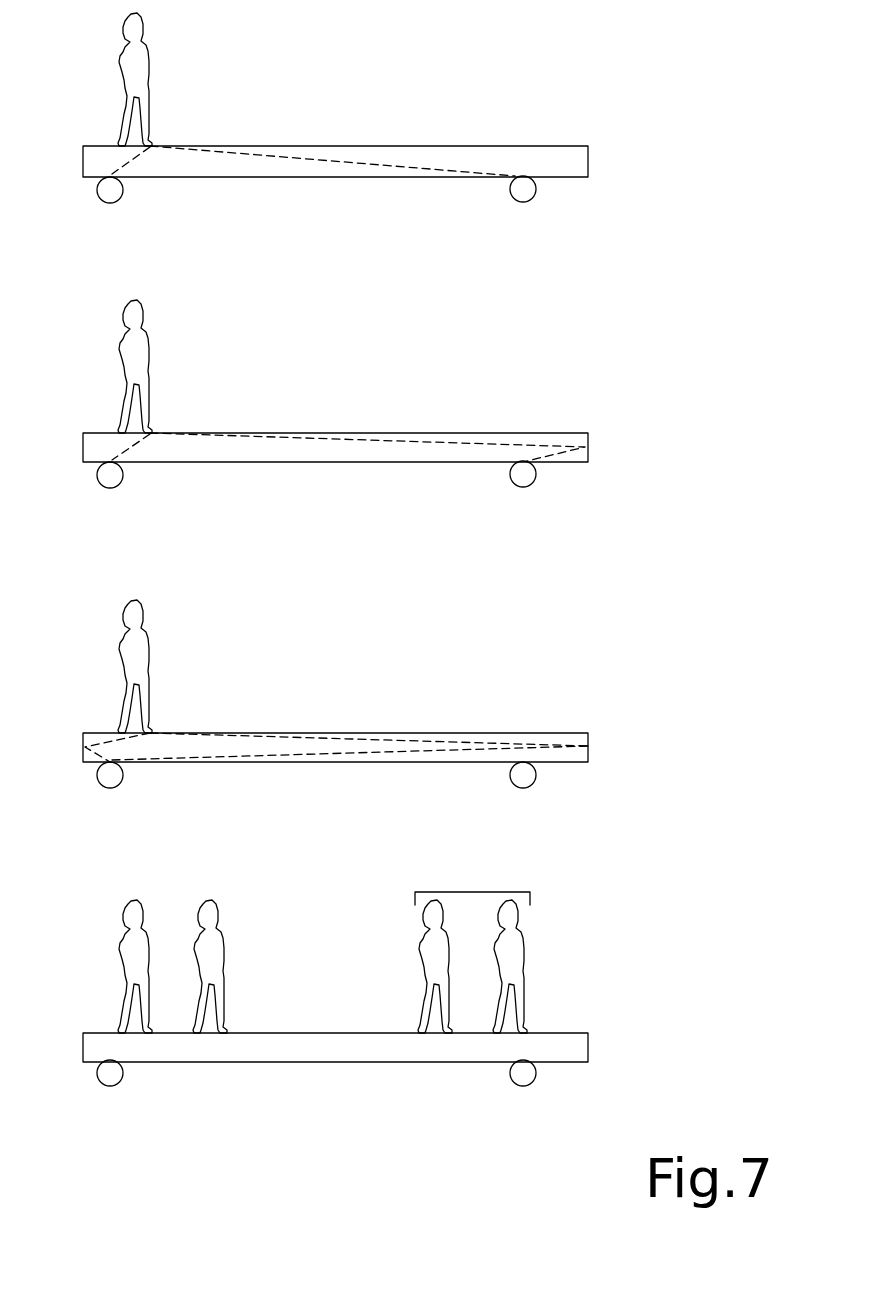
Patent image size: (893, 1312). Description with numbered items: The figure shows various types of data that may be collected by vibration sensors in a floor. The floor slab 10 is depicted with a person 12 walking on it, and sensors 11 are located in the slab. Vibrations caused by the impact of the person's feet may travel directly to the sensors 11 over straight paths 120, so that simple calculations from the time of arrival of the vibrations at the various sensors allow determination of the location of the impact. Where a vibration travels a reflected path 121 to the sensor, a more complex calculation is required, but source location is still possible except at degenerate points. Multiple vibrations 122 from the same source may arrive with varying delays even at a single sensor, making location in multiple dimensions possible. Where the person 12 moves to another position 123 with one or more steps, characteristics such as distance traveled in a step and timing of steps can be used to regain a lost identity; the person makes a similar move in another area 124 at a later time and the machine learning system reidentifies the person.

The floor slab 10 is at (335, 177).
The sensors 11 is at (123, 193).
The person 12 is at (149, 70).
The straight paths 120 is at (130, 162).
The reflected path 121 is at (371, 440).
The multiple vibrations 122 is at (105, 740).
The another position 123 is at (227, 953).
The another area 124 is at (463, 892).